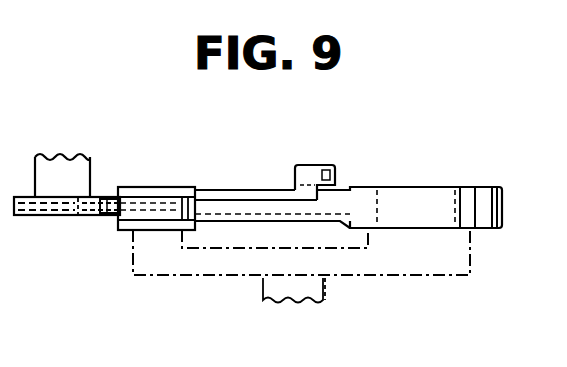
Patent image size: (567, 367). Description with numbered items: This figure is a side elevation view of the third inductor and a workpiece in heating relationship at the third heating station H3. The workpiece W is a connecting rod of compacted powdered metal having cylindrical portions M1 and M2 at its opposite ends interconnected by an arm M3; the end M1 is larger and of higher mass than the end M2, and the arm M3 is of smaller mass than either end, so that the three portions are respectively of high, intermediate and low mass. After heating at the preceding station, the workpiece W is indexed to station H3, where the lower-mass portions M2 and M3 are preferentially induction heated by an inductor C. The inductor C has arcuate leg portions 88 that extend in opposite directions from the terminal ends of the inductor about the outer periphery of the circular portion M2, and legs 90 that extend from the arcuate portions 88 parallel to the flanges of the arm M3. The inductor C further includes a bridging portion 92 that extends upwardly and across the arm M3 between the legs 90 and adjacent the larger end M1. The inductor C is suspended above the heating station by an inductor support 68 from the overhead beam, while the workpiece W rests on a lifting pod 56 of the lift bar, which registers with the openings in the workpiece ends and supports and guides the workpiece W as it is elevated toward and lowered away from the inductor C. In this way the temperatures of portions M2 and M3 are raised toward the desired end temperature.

The lifting pod 56 is at (160, 276).
The inductor support 68 is at (63, 160).
The arcuate leg portion 88 is at (122, 212).
The leg 90 is at (240, 208).
The bridging portion 92 is at (323, 165).
The inductor C is at (108, 194).
The third heating station H3 is at (172, 134).
The cylindrical portion M1 is at (470, 187).
The cylindrical portion M2 is at (165, 190).
The arm M3 is at (235, 190).
The workpiece W is at (369, 183).